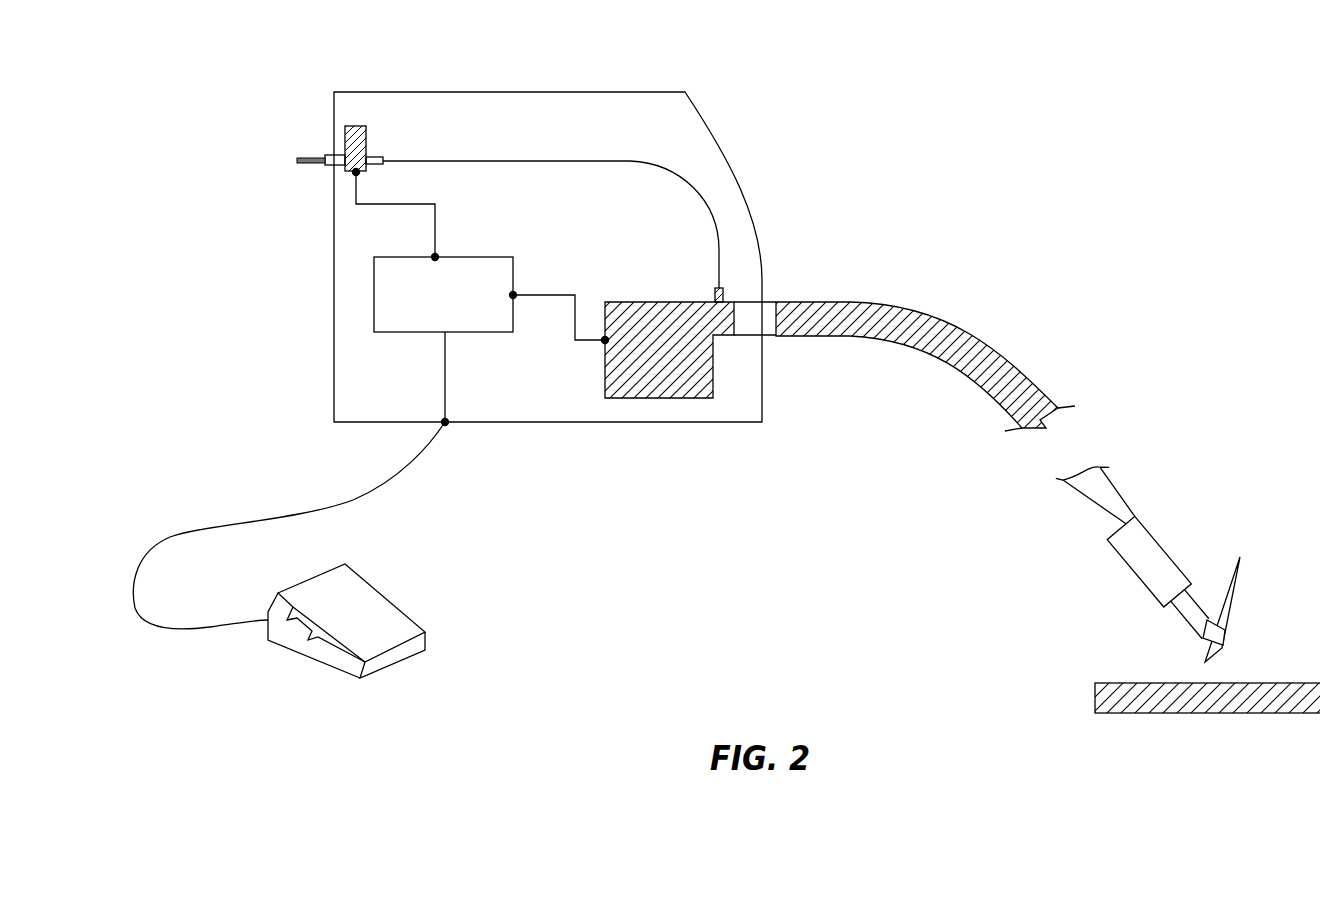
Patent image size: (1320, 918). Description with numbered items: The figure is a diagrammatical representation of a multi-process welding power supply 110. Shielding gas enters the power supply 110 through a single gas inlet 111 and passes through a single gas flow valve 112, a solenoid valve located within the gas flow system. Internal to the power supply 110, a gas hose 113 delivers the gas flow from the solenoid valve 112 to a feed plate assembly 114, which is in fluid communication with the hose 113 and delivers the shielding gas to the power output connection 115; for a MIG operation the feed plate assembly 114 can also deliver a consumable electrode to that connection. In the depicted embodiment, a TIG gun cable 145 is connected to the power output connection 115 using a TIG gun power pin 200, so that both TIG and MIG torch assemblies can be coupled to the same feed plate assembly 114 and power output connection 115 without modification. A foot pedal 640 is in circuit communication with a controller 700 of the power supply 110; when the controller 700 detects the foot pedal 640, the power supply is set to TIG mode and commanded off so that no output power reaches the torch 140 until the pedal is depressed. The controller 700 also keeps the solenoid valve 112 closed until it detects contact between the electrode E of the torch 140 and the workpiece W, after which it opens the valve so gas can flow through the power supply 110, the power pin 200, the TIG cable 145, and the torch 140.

The power supply 110 is at (563, 92).
The gas inlet 111 is at (317, 164).
The gas flow valve 112 is at (352, 135).
The gas hose 113 is at (655, 170).
The feed plate assembly 114 is at (668, 378).
The power output connection 115 is at (960, 218).
The TIG gun power pin 200 is at (752, 312).
The TIG gun cable 145 is at (892, 315).
The torch 140 is at (1155, 533).
The controller 700 is at (374, 290).
The foot pedal 640 is at (377, 627).
The electrode E is at (1210, 657).
The workpiece W is at (1237, 705).